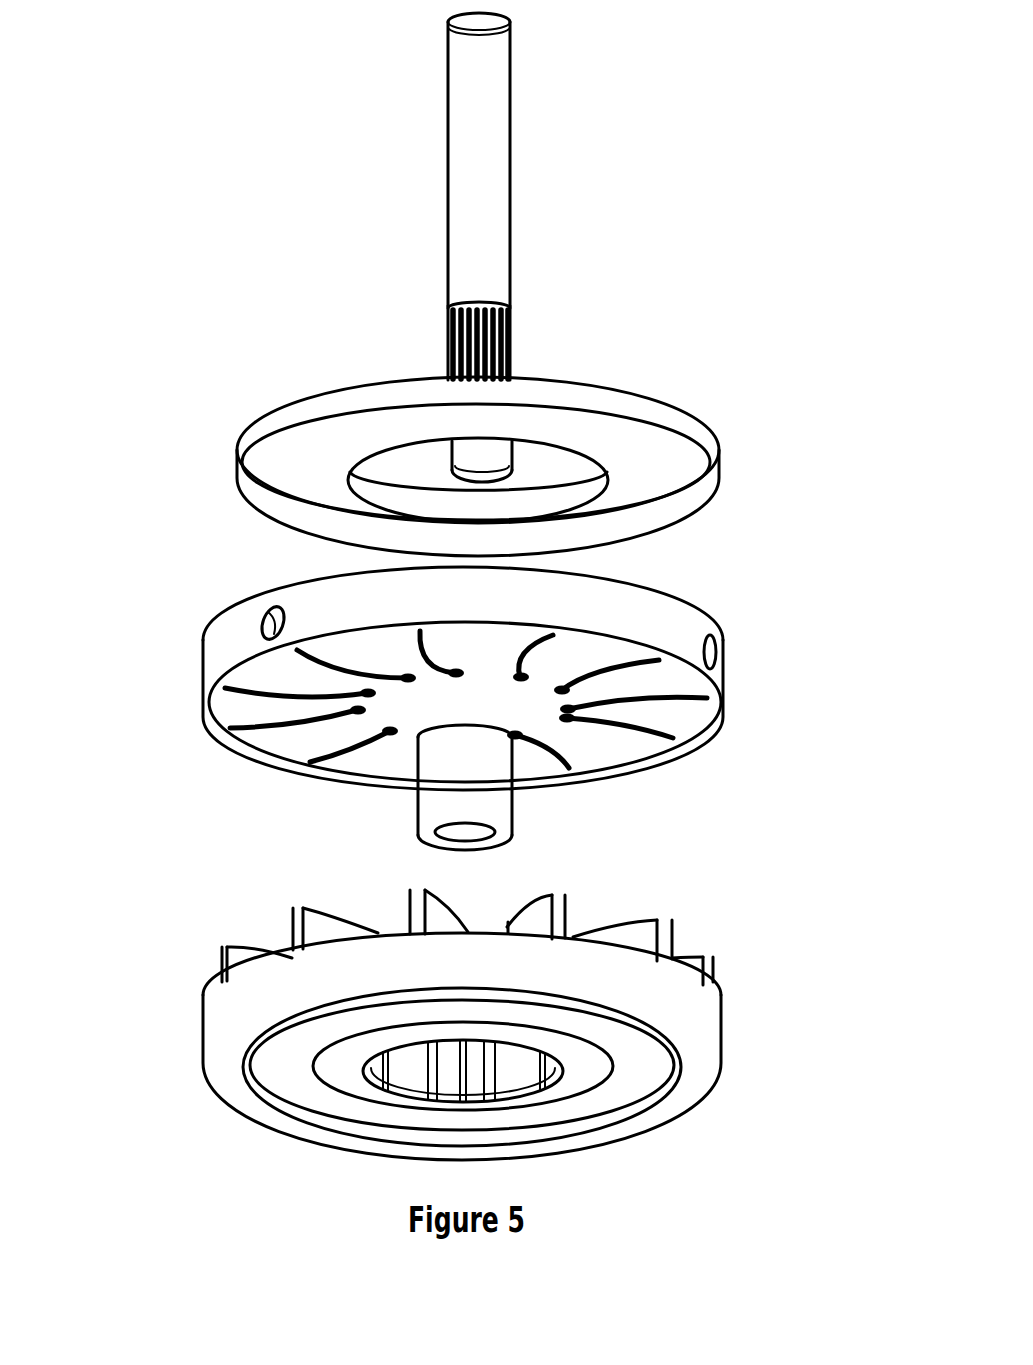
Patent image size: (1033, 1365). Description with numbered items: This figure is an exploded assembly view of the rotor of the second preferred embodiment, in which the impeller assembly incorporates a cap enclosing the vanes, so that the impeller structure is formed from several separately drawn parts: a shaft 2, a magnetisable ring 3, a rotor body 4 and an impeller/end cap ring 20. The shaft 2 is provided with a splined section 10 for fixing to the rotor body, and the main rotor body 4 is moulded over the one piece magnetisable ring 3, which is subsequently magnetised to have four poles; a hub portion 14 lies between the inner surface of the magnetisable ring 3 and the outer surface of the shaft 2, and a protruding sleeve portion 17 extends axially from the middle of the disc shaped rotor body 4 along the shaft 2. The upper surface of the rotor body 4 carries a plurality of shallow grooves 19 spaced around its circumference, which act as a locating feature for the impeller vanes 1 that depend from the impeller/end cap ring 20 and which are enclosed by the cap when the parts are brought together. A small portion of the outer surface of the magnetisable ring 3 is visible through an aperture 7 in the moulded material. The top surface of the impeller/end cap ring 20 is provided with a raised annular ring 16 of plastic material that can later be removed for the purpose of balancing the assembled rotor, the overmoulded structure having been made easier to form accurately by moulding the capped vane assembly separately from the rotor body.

The impeller vanes 1 is at (563, 900).
The shaft 2 is at (488, 203).
The magnetisable ring 3 is at (663, 454).
The rotor body 4 is at (235, 633).
The aperture 7 is at (716, 652).
The splined section 10 is at (510, 333).
The hub portion 14 is at (405, 718).
The raised annular ring 16 is at (700, 1068).
The protruding sleeve portion 17 is at (492, 795).
The shallow grooves 19 is at (557, 628).
The impeller/end cap ring 20 is at (697, 1012).